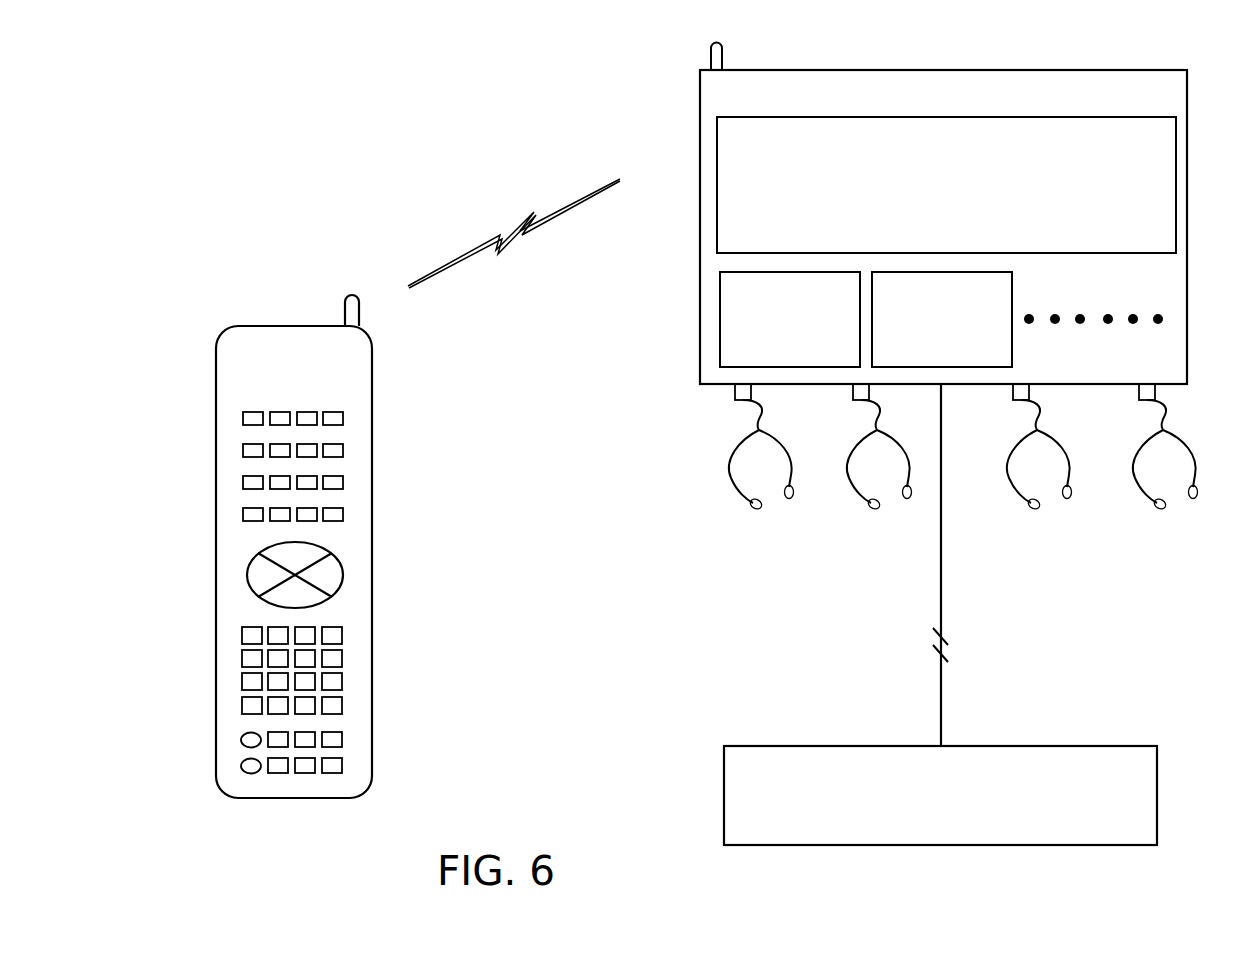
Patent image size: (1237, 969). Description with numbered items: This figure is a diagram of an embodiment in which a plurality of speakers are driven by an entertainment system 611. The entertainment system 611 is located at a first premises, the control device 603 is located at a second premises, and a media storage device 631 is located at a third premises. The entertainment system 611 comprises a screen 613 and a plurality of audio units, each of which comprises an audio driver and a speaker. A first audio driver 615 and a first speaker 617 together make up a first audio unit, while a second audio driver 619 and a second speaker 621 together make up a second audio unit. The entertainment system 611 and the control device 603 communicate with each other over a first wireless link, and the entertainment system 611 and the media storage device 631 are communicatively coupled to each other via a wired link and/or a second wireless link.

The control device 603 is at (294, 546).
The entertainment system 611 is at (943, 222).
The screen 613 is at (946, 185).
The first audio driver 615 is at (790, 319).
The first speaker 617 is at (724, 499).
The second audio driver 619 is at (942, 319).
The second speaker 621 is at (840, 489).
The media storage device 631 is at (940, 795).